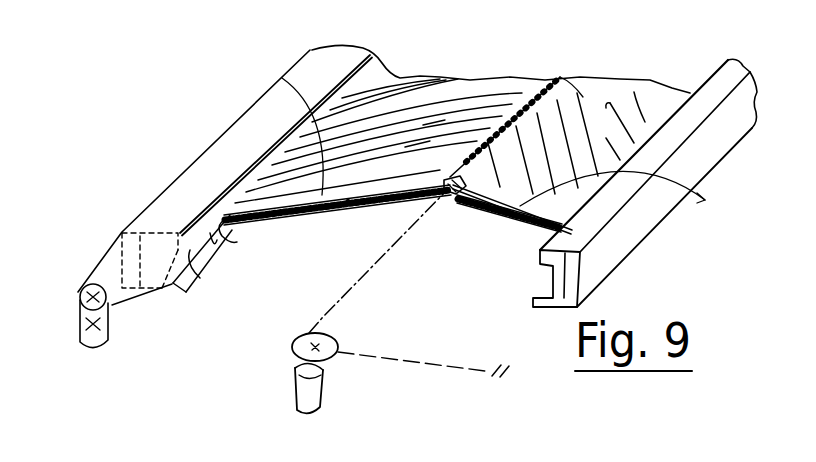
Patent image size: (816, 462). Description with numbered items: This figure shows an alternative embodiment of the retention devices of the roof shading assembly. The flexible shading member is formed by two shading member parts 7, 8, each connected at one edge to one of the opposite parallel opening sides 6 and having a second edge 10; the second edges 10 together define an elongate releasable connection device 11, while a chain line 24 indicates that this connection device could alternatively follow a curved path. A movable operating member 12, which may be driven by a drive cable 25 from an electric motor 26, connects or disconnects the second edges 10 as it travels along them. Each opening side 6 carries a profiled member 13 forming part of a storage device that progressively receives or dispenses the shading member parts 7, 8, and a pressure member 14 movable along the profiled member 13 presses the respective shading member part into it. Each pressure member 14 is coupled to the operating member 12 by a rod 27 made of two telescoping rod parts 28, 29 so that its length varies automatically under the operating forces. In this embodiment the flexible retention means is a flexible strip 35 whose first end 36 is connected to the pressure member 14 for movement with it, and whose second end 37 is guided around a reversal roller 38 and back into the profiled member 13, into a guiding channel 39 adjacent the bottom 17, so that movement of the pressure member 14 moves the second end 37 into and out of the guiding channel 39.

The opening side 6 is at (311, 88).
The shading member part 7 is at (453, 84).
The shading member part 8 is at (632, 93).
The second edge 10 is at (490, 136).
The elongate releasable connection device 11 is at (507, 117).
The operating member 12 is at (455, 200).
The profiled member 13 is at (247, 153).
The pressure member 14 is at (216, 238).
The bottom 17 is at (150, 262).
The chain line 24 is at (583, 97).
The drive cable 25 is at (363, 274).
The electric motor 26 is at (314, 395).
The rod 27 is at (348, 203).
The rod part 28 is at (374, 203).
The rod part 29 is at (277, 214).
The flexible strip 35 is at (141, 298).
The first end 36 is at (200, 279).
The second end 37 is at (112, 266).
The reversal roller 38 is at (84, 298).
The guiding channel 39 is at (146, 265).